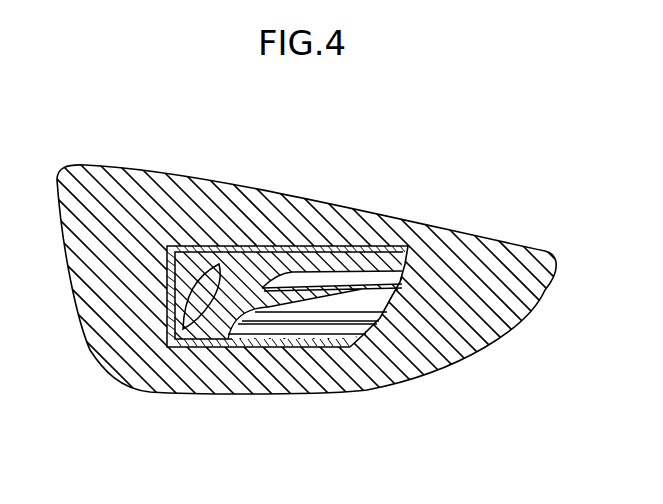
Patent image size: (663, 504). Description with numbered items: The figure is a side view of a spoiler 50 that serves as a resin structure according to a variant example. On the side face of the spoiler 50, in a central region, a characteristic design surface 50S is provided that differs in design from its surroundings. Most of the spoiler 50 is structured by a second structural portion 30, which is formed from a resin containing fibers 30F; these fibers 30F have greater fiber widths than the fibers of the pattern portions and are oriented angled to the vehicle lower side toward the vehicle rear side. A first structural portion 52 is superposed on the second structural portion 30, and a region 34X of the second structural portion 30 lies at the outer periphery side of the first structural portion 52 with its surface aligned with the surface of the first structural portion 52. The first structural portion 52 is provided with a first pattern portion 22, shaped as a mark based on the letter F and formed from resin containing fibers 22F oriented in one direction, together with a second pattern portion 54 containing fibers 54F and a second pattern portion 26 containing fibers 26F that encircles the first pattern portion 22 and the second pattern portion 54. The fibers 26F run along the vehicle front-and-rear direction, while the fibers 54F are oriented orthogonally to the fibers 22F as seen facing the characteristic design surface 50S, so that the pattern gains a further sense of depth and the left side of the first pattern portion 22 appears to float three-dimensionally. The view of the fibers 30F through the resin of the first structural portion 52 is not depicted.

The second structural portion 30 is at (503, 242).
The spoiler 50 is at (461, 172).
The region disposed at the outer periphery side of the first structural portion 34X is at (497, 312).
The fibers 30F is at (465, 341).
The first pattern portion 22 is at (298, 257).
The fibers 22F is at (262, 290).
The second pattern portion 54 is at (186, 283).
The fibers 54F is at (202, 297).
The second pattern portion 26 is at (391, 279).
The fibers 26F is at (353, 322).
The first structural portion 52 is at (303, 329).
The characteristic design surface 50S is at (260, 340).